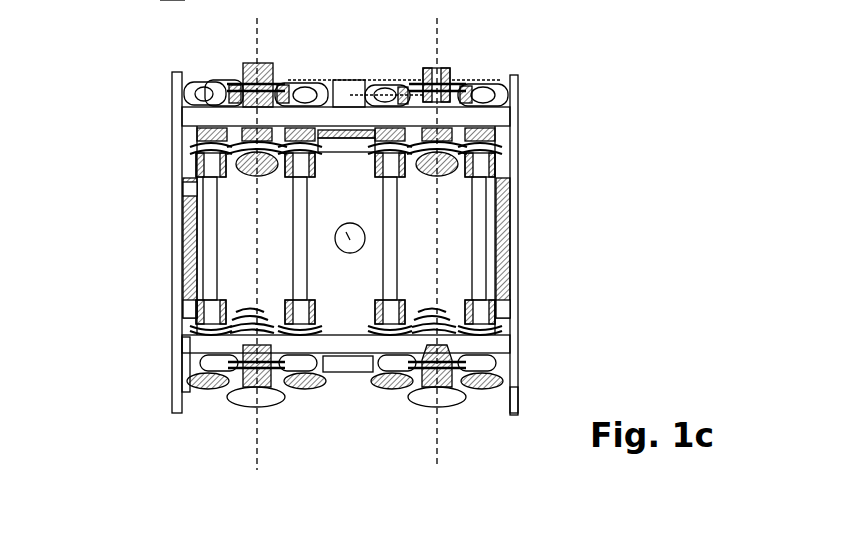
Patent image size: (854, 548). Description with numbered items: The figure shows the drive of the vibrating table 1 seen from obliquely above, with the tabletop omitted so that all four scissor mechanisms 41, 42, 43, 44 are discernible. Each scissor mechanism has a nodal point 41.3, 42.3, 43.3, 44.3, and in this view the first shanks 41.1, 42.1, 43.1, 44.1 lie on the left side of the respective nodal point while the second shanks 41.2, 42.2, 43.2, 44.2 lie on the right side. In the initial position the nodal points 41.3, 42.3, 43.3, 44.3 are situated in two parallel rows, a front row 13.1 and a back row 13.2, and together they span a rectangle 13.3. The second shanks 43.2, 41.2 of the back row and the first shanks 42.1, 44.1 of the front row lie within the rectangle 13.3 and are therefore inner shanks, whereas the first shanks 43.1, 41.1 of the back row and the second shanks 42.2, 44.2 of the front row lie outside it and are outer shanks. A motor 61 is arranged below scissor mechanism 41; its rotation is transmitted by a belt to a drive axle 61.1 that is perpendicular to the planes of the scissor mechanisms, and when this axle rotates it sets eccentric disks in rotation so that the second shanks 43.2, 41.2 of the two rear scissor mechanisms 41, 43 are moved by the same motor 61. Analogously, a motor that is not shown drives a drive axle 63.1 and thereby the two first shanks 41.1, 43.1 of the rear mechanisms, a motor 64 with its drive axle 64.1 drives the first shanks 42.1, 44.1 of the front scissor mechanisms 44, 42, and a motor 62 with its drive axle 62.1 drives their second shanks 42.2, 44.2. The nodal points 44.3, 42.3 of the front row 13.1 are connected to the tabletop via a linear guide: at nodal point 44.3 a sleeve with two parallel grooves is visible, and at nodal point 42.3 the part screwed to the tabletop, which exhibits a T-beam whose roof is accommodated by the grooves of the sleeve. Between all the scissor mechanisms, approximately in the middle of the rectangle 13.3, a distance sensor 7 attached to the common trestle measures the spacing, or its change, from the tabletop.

The vibrating table 1 is at (148, 201).
The distance sensor 7 is at (333, 231).
The front row 13.1 is at (451, 255).
The back row 13.2 is at (276, 255).
The rectangle 13.3 is at (337, 80).
The scissor mechanism 41 is at (240, 415).
The first shank 41.1 is at (237, 388).
The second shank 41.2 is at (280, 390).
The nodal point 41.3 is at (255, 310).
The scissor mechanism 42 is at (437, 415).
The first shank 42.1 is at (398, 395).
The second shank 42.2 is at (458, 393).
The nodal point 42.3 is at (450, 328).
The scissor mechanism 43 is at (239, 65).
The first shank 43.1 is at (200, 85).
The second shank 43.2 is at (306, 66).
The nodal point 43.3 is at (272, 47).
The scissor mechanism 44 is at (435, 65).
The first shank 44.1 is at (387, 80).
The second shank 44.2 is at (462, 82).
The nodal point 44.3 is at (441, 65).
The motor 61 is at (273, 403).
The drive axle 61.1 is at (297, 274).
The motor 62 is at (412, 398).
The drive axle 62.1 is at (480, 237).
The drive axle 63.1 is at (253, 235).
The motor 64 is at (170, 4).
The drive axle 64.1 is at (393, 200).